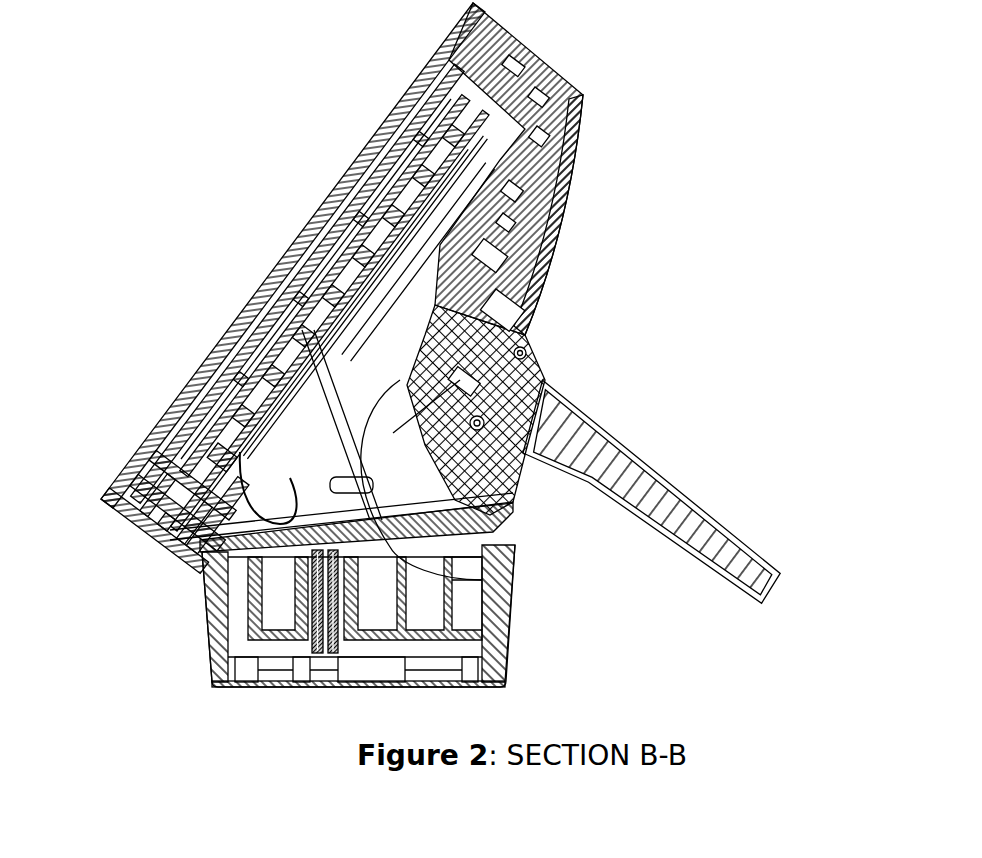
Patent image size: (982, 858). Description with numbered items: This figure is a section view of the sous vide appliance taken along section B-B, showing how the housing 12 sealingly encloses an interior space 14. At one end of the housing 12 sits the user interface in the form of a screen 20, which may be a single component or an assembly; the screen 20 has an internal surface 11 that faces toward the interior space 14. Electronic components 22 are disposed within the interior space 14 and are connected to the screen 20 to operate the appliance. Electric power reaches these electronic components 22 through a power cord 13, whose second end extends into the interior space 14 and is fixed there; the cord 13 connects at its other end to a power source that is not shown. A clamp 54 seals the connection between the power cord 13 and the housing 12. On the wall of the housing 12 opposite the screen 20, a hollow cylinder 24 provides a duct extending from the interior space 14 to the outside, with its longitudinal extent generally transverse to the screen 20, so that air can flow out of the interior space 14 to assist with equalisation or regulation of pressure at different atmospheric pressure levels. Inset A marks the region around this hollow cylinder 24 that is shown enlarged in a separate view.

The screen 20 is at (238, 277).
The internal surface 11 is at (265, 323).
The electronic components 22 is at (252, 396).
The interior space 14 is at (377, 330).
The housing 12 is at (541, 272).
The clamp 54 is at (522, 353).
The power cord 13 is at (770, 557).
The inset A is at (545, 517).
The hollow cylinder 24 is at (500, 524).